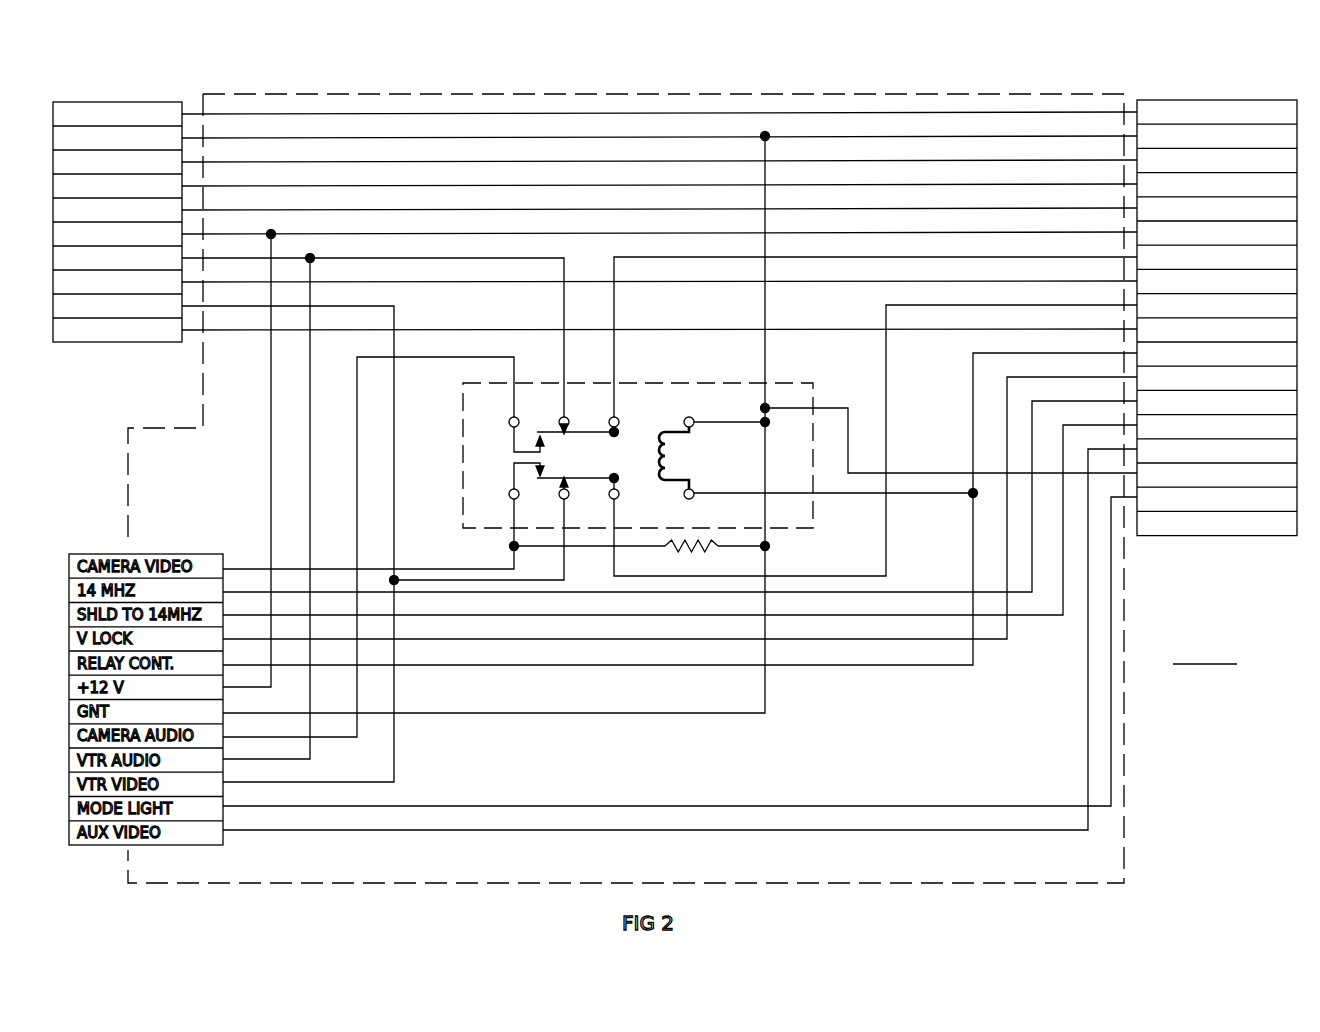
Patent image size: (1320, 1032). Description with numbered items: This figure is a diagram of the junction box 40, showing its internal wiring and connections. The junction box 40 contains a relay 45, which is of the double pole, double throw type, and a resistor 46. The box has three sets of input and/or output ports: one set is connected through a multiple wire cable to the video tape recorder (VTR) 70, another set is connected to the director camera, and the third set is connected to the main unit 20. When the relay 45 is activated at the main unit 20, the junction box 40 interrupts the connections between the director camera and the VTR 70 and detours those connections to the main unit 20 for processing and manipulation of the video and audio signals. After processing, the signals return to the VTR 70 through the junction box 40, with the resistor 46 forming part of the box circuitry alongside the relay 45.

The main unit 20 is at (1208, 297).
The junction box 40 is at (1126, 772).
The relay 45 is at (813, 507).
The resistor 46 is at (720, 549).
The video tape recorder (VTR) 70 is at (117, 204).